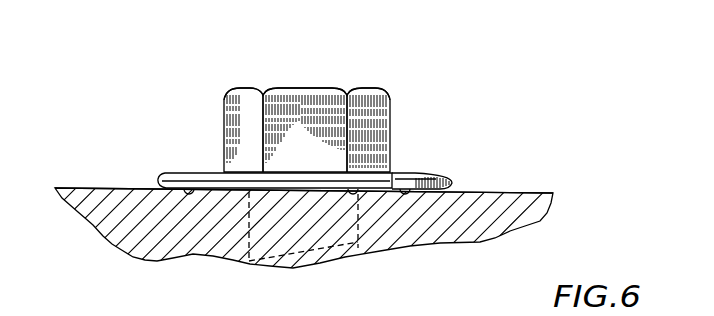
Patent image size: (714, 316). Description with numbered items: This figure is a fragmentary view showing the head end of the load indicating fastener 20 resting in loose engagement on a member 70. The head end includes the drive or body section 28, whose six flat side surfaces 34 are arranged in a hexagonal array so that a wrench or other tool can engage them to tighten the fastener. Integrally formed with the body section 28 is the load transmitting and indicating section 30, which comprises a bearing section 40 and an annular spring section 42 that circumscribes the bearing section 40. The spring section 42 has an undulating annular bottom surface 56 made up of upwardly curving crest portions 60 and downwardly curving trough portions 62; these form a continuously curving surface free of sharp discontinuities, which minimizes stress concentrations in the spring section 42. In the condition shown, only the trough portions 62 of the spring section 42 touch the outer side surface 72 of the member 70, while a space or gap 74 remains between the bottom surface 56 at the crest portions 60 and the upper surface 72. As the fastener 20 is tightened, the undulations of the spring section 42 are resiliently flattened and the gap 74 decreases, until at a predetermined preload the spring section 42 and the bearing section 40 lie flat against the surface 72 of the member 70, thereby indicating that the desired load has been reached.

The load indicating fastener 20 is at (158, 103).
The drive or body section 28 is at (400, 106).
The flat side surfaces 34 is at (358, 88).
The bearing section 40 is at (215, 166).
The spring section 42 is at (447, 167).
The load transmitting and indicating section 30 is at (468, 167).
The undulating annular bottom surface 56 is at (350, 198).
The crest portions 60 is at (313, 193).
The space or gap 74 is at (286, 192).
The trough portions 62 is at (184, 172).
The outer side surface 72 is at (528, 193).
The member 70 is at (546, 213).